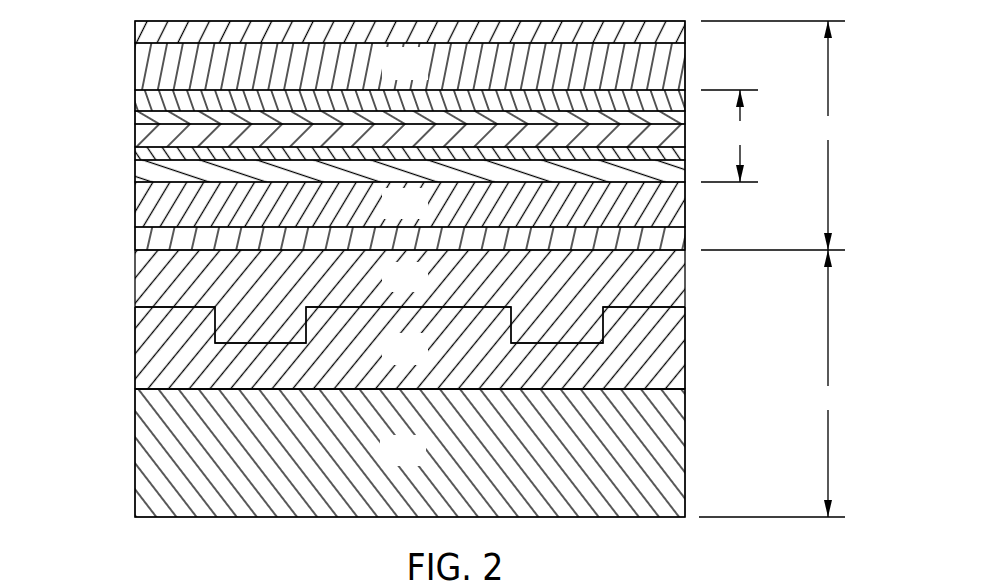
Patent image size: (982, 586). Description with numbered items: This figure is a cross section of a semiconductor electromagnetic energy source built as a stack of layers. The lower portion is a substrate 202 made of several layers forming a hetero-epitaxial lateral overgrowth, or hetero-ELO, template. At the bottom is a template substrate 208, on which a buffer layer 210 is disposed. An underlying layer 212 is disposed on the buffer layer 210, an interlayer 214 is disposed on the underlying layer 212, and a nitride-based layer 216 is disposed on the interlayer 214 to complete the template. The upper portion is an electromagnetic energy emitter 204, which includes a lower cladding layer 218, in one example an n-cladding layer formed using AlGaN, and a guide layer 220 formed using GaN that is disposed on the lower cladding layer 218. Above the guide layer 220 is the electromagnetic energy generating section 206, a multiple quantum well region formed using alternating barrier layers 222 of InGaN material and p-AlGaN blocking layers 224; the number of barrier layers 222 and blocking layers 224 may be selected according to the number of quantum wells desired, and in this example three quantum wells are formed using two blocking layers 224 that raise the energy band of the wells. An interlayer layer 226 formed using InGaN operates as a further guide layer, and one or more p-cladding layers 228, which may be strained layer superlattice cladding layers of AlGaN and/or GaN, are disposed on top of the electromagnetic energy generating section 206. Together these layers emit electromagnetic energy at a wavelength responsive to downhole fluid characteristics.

The substrate 202 is at (773, 383).
The electromagnetic energy emitter 204 is at (774, 135).
The electromagnetic energy generating section 206 is at (729, 136).
The template substrate 208 is at (383, 463).
The buffer layer 210 is at (152, 389).
The underlying layer 212 is at (385, 362).
The interlayer 214 is at (151, 307).
The nitride-based layer 216 is at (385, 289).
The lower cladding layer 218 is at (134, 237).
The guide layer 220 is at (385, 216).
The barrier layers 222 is at (135, 98).
The blocking layers 224 is at (135, 118).
The interlayer layer 226 is at (385, 77).
The p-cladding layers 228 is at (135, 33).